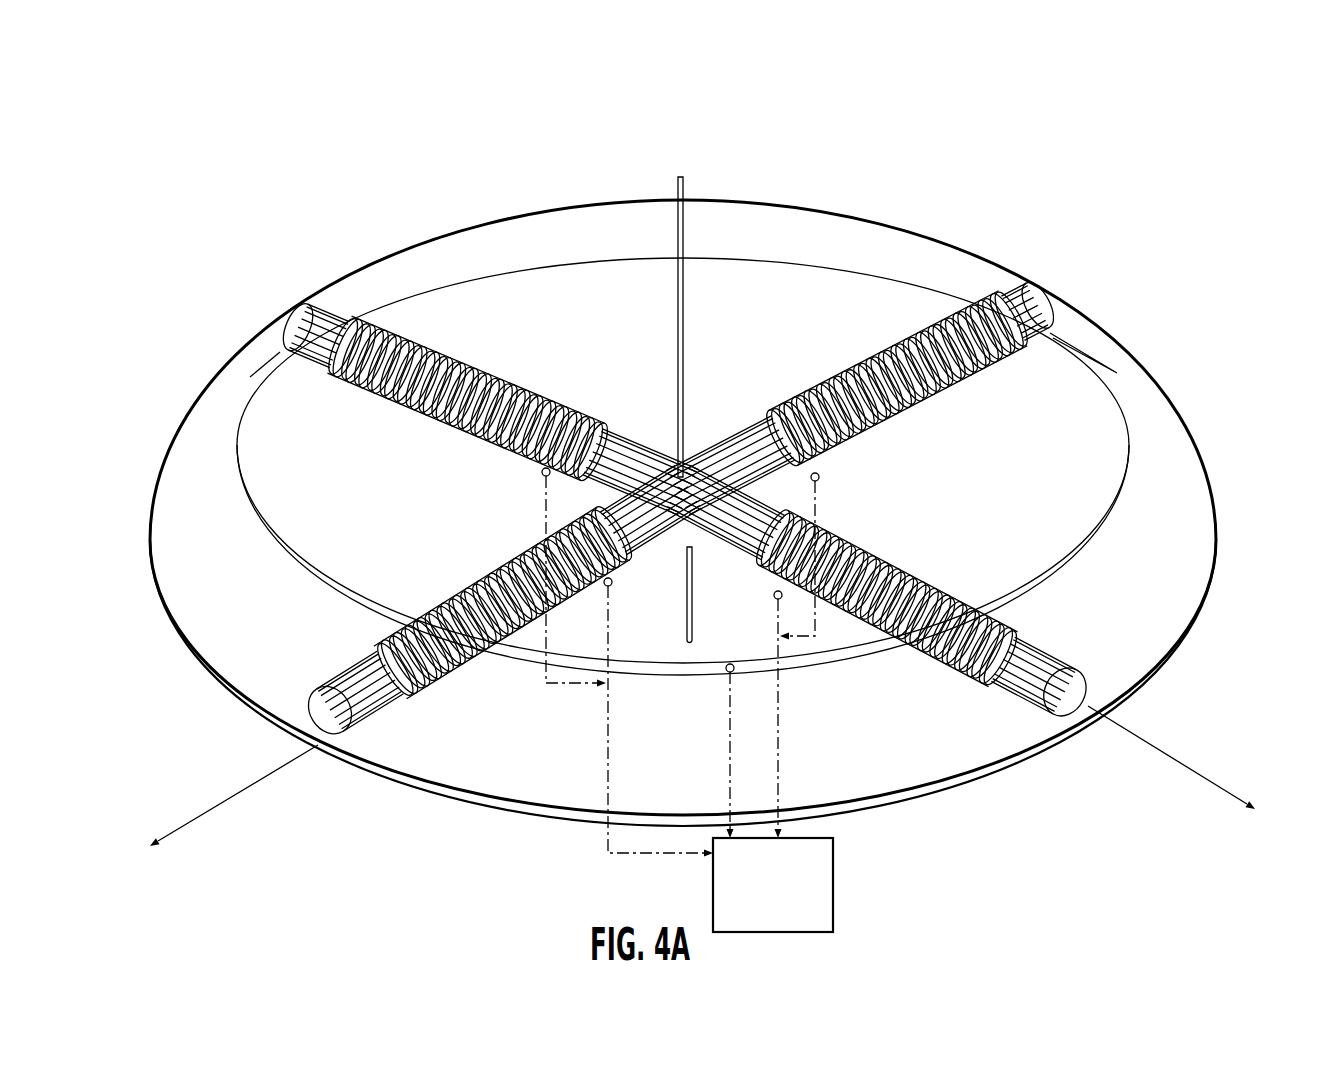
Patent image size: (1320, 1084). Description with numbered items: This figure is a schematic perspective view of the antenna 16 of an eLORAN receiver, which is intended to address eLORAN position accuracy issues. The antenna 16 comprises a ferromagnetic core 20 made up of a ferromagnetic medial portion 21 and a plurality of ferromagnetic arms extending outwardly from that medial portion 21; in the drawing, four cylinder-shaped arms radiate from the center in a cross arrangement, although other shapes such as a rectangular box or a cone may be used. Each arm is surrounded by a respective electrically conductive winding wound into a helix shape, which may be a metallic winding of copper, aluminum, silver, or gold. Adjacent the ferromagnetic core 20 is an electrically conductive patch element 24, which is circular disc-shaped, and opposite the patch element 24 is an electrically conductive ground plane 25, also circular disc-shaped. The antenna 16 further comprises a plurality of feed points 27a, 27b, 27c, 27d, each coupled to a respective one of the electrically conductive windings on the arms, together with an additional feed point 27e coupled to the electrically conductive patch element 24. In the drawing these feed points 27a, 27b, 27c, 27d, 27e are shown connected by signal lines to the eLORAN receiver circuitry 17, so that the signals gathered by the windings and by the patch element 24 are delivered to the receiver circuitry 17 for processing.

The antenna 16 is at (912, 124).
The eLORAN receiver circuitry 17 is at (825, 912).
The ferromagnetic core 20 is at (545, 345).
The ferromagnetic medial portion 21 is at (700, 478).
The electrically conductive patch element 24 is at (935, 252).
The electrically conductive ground plane 25 is at (923, 782).
The feed point 27a is at (541, 472).
The feed point 27b is at (818, 473).
The feed point 27c is at (781, 592).
The feed point 27d is at (612, 584).
The feed point 27e is at (729, 673).